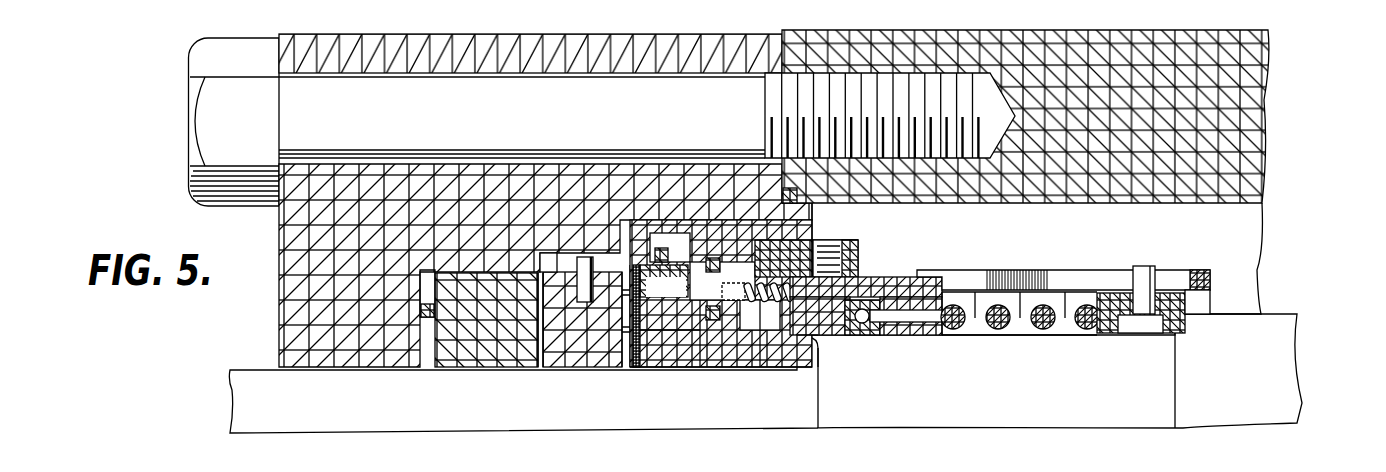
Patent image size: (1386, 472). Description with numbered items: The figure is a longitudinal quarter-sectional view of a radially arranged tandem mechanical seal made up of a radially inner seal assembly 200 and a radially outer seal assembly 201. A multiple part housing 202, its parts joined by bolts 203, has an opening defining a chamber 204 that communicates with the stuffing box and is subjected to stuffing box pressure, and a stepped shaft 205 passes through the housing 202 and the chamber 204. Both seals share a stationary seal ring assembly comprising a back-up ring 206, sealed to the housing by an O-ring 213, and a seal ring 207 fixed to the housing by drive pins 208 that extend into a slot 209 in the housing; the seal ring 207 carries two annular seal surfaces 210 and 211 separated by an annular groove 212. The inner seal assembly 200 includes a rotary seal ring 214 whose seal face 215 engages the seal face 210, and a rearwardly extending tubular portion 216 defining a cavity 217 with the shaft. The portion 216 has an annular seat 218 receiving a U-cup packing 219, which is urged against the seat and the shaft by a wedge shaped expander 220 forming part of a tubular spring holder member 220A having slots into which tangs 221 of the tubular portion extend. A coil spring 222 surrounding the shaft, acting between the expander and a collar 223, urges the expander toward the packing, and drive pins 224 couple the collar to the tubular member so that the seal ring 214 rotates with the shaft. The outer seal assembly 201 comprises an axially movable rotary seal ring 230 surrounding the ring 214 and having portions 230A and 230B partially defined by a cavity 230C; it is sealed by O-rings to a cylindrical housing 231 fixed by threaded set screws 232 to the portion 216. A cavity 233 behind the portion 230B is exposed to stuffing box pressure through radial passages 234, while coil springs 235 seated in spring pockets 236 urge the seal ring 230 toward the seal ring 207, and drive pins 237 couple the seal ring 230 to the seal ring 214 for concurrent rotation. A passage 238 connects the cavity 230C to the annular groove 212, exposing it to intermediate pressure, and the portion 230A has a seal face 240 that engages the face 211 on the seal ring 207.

The seal assembly 200 is at (700, 371).
The seal assembly 201 is at (628, 246).
The housing 202 is at (1250, 127).
The bolts 203 is at (626, 121).
The chamber 204 is at (1247, 218).
The stepped shaft 205 is at (1280, 338).
The back-up ring 206 is at (461, 353).
The seal ring 207 is at (556, 353).
The drive pins 208 is at (583, 258).
The slot 209 is at (585, 258).
The annular seal surface 210 is at (616, 346).
The annular seal surface 211 is at (631, 306).
The annular groove 212 is at (588, 354).
The O-ring 213 is at (420, 308).
The rotary seal ring 214 is at (819, 367).
The seal face 215 is at (655, 352).
The tubular portion 216 is at (863, 280).
The cavity 217 is at (812, 343).
The annular seat 218 is at (849, 318).
The U-cup packing 219 is at (937, 320).
The wedge shaped expander 220 is at (924, 324).
The tubular spring holder member 220A is at (1052, 277).
The tangs 221 is at (931, 280).
The coil spring 222 is at (1044, 322).
The collar 223 is at (1108, 324).
The drive pins 224 is at (1142, 268).
The rotary seal ring 230 is at (665, 330).
The seal ring portion 230A is at (680, 262).
The seal ring portion 230B is at (716, 322).
The cavity 230C is at (692, 266).
The cylindrical housing 231 is at (835, 243).
The threaded set screws 232 is at (832, 237).
The cavity 233 is at (762, 312).
The radial passages 234 is at (748, 264).
The coil springs 235 is at (816, 352).
The spring pockets 236 is at (800, 205).
The drive pins 237 is at (748, 320).
The passage 238 is at (705, 364).
The seal face 240 is at (664, 282).